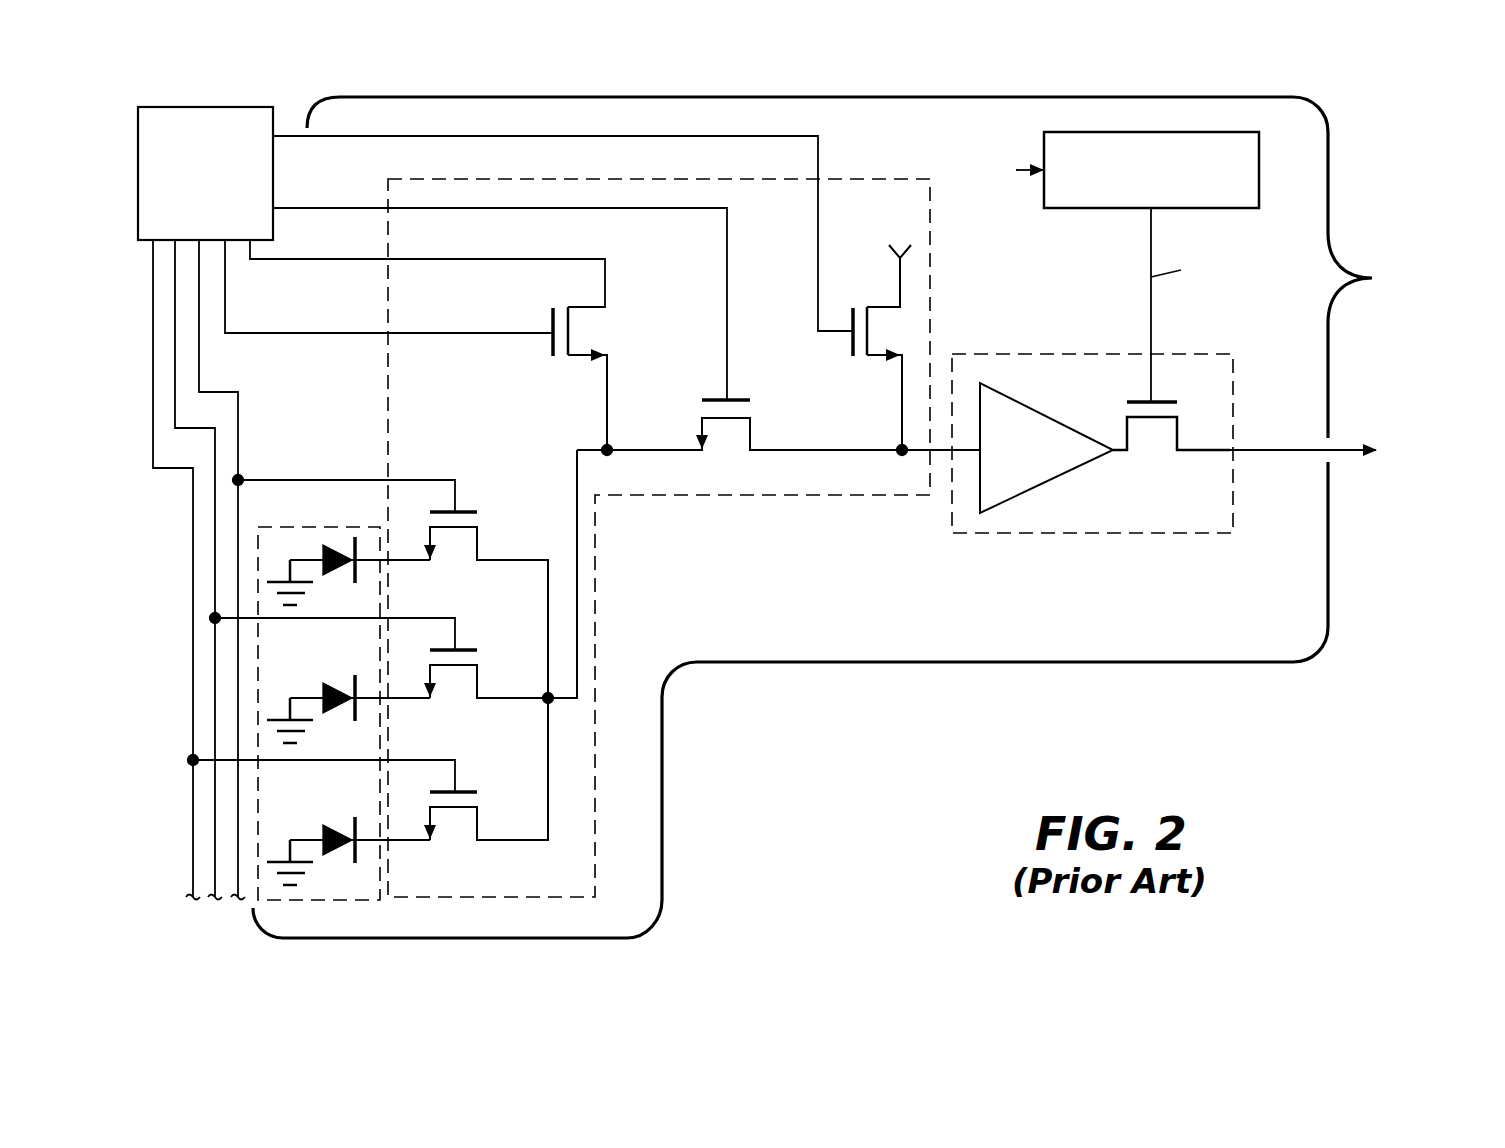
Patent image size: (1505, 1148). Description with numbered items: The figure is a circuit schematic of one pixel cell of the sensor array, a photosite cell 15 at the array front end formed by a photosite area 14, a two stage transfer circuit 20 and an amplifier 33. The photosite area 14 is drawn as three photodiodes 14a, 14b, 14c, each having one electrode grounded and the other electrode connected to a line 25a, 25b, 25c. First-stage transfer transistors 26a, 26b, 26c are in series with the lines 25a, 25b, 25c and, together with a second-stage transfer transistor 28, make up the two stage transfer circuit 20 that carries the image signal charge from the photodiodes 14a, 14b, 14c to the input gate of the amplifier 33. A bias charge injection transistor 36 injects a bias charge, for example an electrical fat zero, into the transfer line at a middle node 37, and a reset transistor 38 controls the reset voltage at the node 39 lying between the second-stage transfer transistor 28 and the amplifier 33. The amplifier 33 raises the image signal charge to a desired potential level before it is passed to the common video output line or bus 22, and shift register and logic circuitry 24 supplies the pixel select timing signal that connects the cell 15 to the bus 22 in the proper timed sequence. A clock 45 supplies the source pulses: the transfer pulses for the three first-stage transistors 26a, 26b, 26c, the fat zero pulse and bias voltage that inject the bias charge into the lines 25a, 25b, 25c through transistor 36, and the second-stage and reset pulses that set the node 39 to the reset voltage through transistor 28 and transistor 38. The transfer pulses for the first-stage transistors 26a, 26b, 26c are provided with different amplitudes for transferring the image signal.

The photosite area 14 is at (258, 803).
The photodiode 14a is at (335, 577).
The photodiode 14b is at (335, 715).
The photodiode 14c is at (323, 836).
The photosite cell 15 is at (1349, 104).
The two stage transfer circuit 20 is at (595, 625).
The common video output line or bus 22 is at (1265, 452).
The shift register and logic circuitry 24 is at (1087, 194).
The line 25a is at (398, 559).
The line 25b is at (398, 697).
The line 25c is at (398, 839).
The first-stage transfer transistor 26a is at (445, 549).
The first-stage transfer transistor 26b is at (445, 687).
The first-stage transfer transistor 26c is at (445, 829).
The second-stage transfer transistor 28 is at (727, 458).
The amplifier 33 is at (1226, 348).
The bias charge injection transistor 36 is at (613, 333).
The middle node 37 is at (610, 452).
The reset transistor 38 is at (899, 325).
The node 39 is at (900, 453).
The clock 45 is at (232, 106).